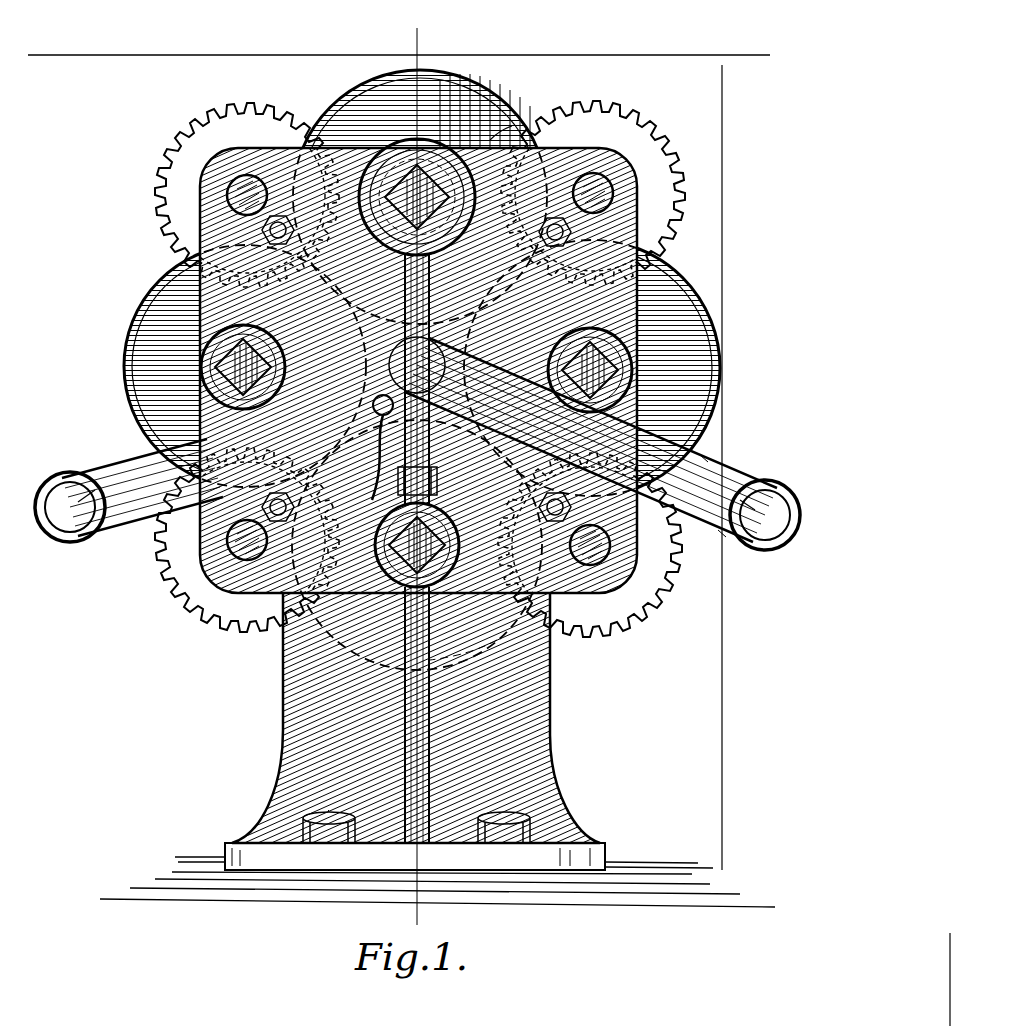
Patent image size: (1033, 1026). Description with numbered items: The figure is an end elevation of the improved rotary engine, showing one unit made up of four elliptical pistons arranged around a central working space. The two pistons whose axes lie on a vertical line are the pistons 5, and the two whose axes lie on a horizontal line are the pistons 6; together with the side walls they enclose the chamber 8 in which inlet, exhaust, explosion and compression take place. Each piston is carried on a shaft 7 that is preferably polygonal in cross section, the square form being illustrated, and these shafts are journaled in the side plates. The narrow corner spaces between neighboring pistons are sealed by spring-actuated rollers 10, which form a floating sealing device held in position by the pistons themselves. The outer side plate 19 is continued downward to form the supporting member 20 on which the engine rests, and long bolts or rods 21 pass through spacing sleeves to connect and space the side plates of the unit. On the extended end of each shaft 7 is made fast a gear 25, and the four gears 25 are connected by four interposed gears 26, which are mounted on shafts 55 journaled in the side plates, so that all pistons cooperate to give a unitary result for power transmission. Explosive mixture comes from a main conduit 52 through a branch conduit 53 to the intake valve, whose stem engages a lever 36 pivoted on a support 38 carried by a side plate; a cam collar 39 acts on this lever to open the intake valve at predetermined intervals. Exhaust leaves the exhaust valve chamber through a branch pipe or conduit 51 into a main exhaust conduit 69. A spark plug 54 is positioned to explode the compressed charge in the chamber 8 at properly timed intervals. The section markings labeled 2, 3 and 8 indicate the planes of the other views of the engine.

The section line 2- 2 is at (723, 118).
The section line 3- 3 is at (418, 40).
The pistons 5 is at (520, 112).
The pistons 6 is at (123, 374).
The shafts 7 is at (240, 205).
The chamber 8 is at (52, 53).
The spring-actuated rollers 10 is at (488, 311).
The side walls 19 is at (638, 228).
The supporting members 20 is at (553, 698).
The long bolts or rods 21 is at (268, 237).
The gear 25 is at (336, 102).
The interposed gears 26 is at (195, 145).
The lever 36 is at (572, 409).
The support 38 is at (446, 491).
The cam collar 39 is at (497, 140).
The branch pipe or conduit 51 is at (123, 522).
The main conduit 52 is at (762, 551).
The branch conduit 53 is at (717, 452).
The spark plug 54 is at (370, 399).
The shafts 55 is at (228, 197).
The main exhaust conduit 69 is at (73, 549).